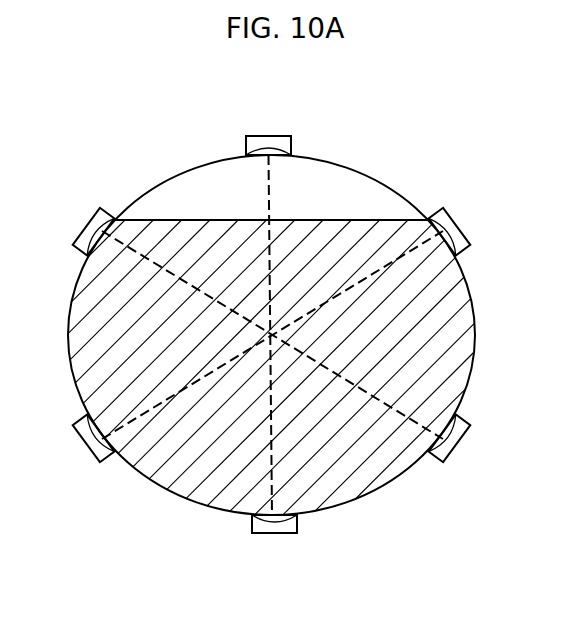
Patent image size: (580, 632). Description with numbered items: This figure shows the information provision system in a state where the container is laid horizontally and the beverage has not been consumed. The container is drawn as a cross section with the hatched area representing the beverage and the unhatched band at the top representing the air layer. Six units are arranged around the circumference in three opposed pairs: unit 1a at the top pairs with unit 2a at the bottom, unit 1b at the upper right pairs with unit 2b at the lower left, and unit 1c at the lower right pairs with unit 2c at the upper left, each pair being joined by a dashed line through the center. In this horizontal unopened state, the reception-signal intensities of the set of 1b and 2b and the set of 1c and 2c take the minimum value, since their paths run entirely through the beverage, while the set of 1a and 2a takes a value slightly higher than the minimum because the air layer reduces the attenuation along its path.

The transmission unit 1a is at (278, 135).
The transmission unit 1b is at (456, 215).
The transmission unit 1c is at (460, 450).
The reception unit 2a is at (270, 536).
The reception unit 2b is at (92, 449).
The reception unit 2c is at (90, 226).